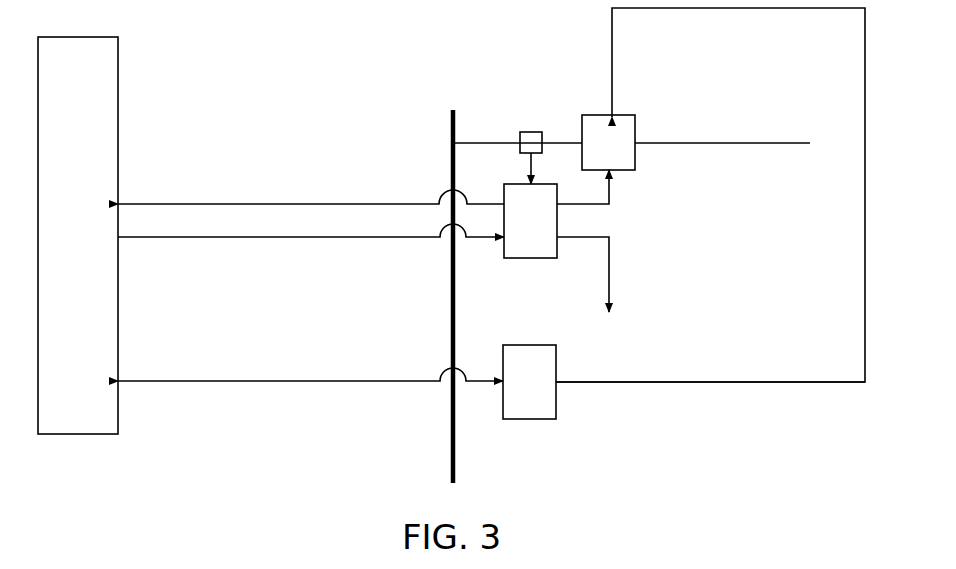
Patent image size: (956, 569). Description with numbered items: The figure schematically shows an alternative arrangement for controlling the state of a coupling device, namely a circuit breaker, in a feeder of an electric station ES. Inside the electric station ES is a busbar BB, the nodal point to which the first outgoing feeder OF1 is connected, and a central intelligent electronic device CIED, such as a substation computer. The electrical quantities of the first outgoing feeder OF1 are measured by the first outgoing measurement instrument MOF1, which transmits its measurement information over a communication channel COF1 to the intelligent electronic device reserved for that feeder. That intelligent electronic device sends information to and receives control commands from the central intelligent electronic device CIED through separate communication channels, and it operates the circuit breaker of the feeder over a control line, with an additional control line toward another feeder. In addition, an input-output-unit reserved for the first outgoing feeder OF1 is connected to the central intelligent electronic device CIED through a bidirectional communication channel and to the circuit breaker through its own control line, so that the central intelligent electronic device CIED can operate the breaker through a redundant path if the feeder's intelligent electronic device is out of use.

The central intelligent electronic device CIED is at (82, 72).
The electric station ES is at (481, 62).
The busbar BB is at (456, 105).
The communication channel COF1 is at (527, 148).
The first outgoing measurement instrument MOF1 is at (523, 130).
The first outgoing feeder OF1 is at (765, 141).